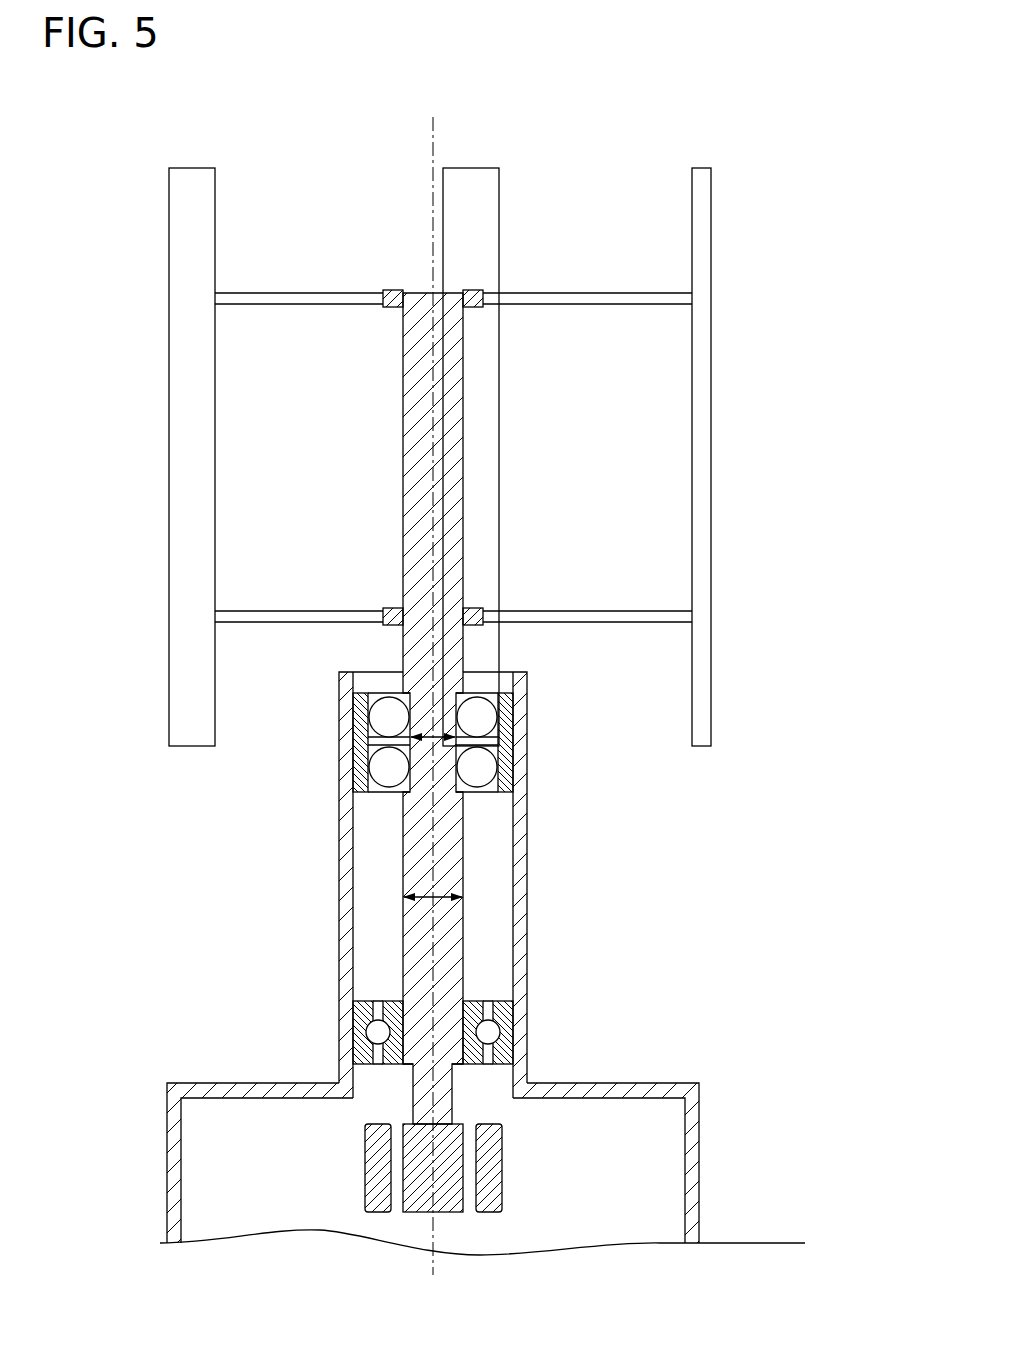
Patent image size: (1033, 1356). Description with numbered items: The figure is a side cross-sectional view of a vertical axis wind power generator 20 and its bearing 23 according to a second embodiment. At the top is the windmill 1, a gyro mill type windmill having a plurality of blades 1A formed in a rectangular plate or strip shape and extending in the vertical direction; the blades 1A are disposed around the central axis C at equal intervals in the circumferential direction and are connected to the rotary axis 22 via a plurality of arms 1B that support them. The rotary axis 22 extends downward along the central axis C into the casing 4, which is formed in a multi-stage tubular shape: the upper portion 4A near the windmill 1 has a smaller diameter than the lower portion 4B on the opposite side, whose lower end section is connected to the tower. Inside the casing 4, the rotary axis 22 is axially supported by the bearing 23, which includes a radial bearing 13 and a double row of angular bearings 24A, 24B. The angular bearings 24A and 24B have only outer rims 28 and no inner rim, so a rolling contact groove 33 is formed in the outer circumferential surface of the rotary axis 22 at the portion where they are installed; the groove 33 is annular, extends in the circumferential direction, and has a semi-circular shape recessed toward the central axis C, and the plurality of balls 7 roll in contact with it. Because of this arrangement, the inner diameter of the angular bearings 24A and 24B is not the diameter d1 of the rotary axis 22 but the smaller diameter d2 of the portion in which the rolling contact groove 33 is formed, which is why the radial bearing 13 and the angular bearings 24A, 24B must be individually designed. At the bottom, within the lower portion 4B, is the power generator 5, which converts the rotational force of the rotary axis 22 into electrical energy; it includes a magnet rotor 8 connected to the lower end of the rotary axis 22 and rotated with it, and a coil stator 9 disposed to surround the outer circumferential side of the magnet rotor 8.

The vertical axis wind power generator 20 is at (718, 119).
The windmill 1 is at (713, 236).
The blades 1A is at (169, 457).
The arms 1B is at (299, 291).
The central axis C is at (433, 137).
The rotary axis 22 is at (401, 888).
The diameter of the rotary axis d1 is at (463, 876).
The diameter of the rolling contact groove portion d2 is at (515, 740).
The casing 4 is at (501, 959).
The upper portion 4A is at (531, 685).
The lower portion 4B is at (707, 1160).
The bearing 23 is at (441, 868).
The angular bearing 24A is at (473, 745).
The angular bearing 24B is at (477, 806).
The radial bearing 13 is at (385, 975).
The balls 7 is at (389, 700).
The outer rims 28 is at (360, 713).
The rolling contact groove 33 is at (360, 758).
The power generator 5 is at (491, 1177).
The magnet rotor 8 is at (455, 1212).
The coil stator 9 is at (502, 1168).